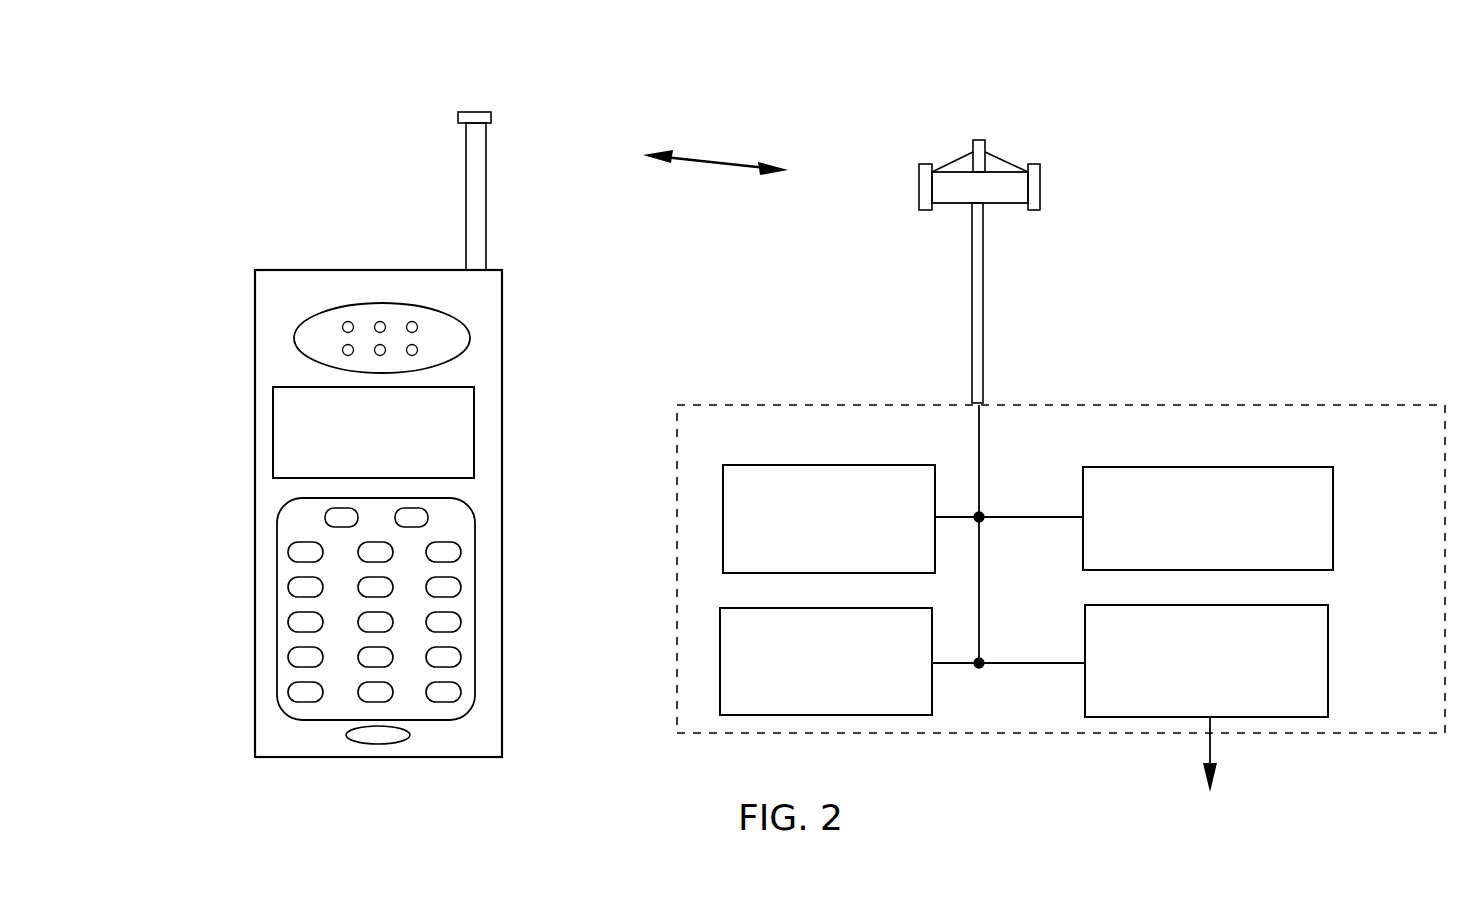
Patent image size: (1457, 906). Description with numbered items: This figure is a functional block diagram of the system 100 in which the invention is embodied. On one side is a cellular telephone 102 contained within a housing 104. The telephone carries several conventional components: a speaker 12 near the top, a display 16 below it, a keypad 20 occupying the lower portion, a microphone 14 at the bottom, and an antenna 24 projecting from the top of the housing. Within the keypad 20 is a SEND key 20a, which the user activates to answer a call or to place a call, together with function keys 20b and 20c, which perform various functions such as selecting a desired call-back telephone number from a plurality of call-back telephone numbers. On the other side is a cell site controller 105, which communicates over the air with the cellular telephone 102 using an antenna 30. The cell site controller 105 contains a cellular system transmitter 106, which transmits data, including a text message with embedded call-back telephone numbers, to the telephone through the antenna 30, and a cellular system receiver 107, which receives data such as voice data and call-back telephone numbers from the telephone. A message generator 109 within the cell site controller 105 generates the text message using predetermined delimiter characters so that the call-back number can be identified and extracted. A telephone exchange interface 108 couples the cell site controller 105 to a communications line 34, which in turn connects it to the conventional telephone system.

The system 100 is at (948, 108).
The cellular telephone 102 is at (252, 232).
The housing 104 is at (312, 270).
The antenna 24 is at (466, 173).
The speaker 12 is at (470, 338).
The display 16 is at (474, 420).
The keypad 20 is at (475, 540).
The SEND key 20a is at (290, 552).
The function key 20b is at (325, 517).
The function key 20c is at (428, 520).
The microphone 14 is at (382, 745).
The antenna 30 is at (983, 295).
The cell site controller 105 is at (1098, 405).
The cellular system transmitter 106 is at (787, 465).
The cellular system receiver 107 is at (780, 608).
The telephone exchange interface 108 is at (1330, 652).
The message generator 109 is at (1333, 505).
The communications line 34 is at (1212, 760).